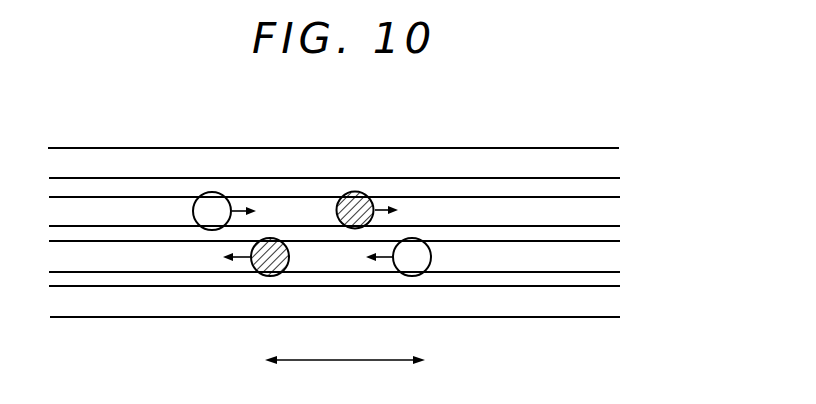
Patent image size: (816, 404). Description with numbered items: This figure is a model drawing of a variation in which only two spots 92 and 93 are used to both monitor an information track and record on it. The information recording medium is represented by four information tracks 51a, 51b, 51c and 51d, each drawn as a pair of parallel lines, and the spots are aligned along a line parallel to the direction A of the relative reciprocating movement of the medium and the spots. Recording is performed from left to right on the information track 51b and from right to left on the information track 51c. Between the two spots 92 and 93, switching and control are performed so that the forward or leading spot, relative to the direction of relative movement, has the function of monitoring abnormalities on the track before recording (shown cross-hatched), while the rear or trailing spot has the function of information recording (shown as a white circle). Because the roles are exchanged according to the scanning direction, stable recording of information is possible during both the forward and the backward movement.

The information track 51a is at (612, 163).
The information track 51b is at (613, 211).
The information track 51c is at (613, 256).
The information track 51d is at (613, 302).
The spot 92 is at (270, 238).
The spot 93 is at (415, 238).
The direction of relative reciprocating movement A is at (345, 346).